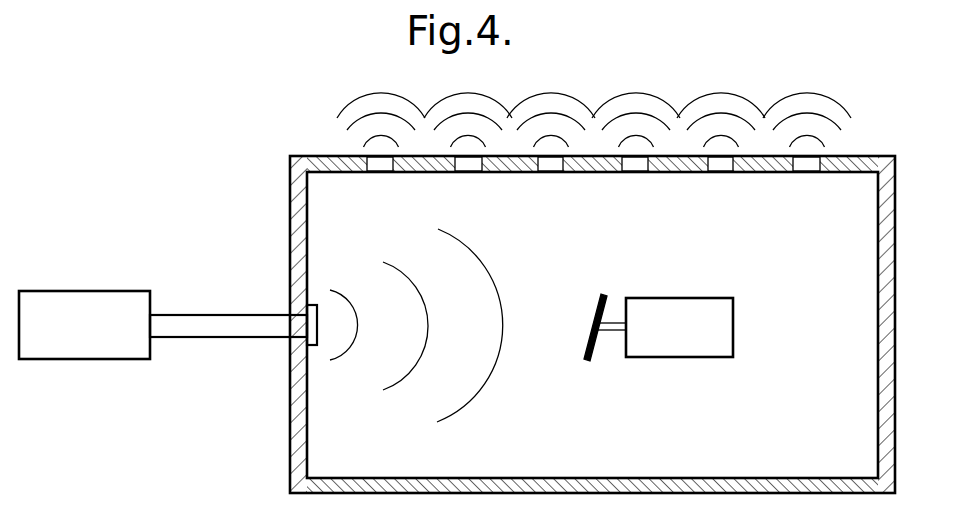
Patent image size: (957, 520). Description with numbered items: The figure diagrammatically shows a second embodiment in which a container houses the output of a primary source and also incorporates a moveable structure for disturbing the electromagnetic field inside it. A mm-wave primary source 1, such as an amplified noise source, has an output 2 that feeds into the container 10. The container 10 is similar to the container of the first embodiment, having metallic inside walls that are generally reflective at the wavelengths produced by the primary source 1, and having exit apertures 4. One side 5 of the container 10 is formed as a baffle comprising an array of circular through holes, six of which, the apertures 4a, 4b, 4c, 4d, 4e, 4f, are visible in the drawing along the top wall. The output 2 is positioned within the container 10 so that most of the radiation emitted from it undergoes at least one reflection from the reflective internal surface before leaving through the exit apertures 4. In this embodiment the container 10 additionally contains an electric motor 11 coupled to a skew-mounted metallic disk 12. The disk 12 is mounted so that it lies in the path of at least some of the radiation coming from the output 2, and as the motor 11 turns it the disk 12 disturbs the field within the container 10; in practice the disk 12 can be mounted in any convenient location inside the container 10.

The primary source 1 is at (90, 302).
The output 2 is at (322, 338).
The exit apertures 4 is at (373, 126).
The aperture 4a is at (380, 163).
The aperture 4b is at (468, 163).
The aperture 4c is at (550, 163).
The aperture 4d is at (635, 163).
The aperture 4e is at (720, 163).
The aperture 4f is at (806, 163).
The side 5 is at (678, 173).
The container 10 is at (297, 188).
The electric motor 11 is at (718, 328).
The skew-mounted metallic disk 12 is at (590, 336).